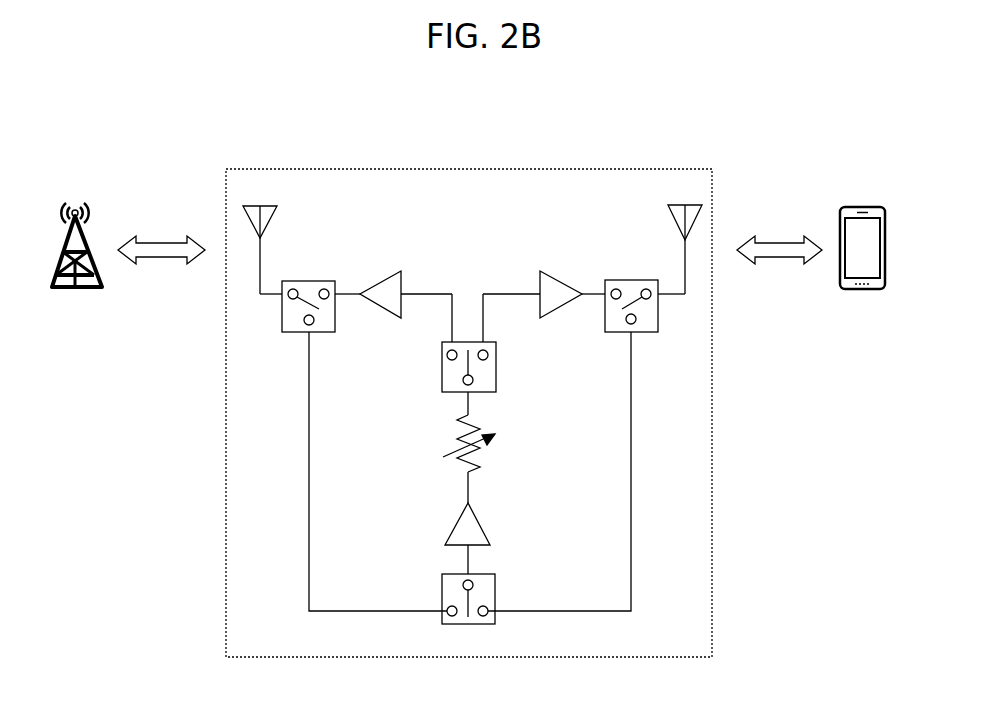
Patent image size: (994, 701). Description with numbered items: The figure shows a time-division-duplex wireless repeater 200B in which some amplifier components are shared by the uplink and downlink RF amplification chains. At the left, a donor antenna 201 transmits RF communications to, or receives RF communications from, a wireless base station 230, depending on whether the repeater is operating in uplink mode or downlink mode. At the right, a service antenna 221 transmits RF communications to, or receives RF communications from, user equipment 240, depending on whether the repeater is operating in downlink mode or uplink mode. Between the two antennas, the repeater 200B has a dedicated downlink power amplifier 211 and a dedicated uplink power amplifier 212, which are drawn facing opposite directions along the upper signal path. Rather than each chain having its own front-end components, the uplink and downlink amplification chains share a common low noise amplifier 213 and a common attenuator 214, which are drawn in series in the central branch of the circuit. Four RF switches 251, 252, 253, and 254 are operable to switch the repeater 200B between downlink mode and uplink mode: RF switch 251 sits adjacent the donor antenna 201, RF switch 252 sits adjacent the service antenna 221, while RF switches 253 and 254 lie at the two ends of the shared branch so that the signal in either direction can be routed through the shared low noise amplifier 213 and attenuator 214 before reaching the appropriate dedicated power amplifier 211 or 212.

The repeater 200B is at (437, 388).
The wireless base station 230 is at (77, 230).
The user equipment 240 is at (862, 235).
The donor antenna 201 is at (262, 240).
The service antenna 221 is at (680, 239).
The RF switch 251 is at (308, 296).
The RF switch 252 is at (631, 294).
The RF switch 253 is at (470, 478).
The RF switch 254 is at (489, 354).
The downlink power amplifier 211 is at (544, 287).
The uplink power amplifier 212 is at (393, 289).
The low noise amplifier 213 is at (486, 538).
The attenuator 214 is at (485, 459).